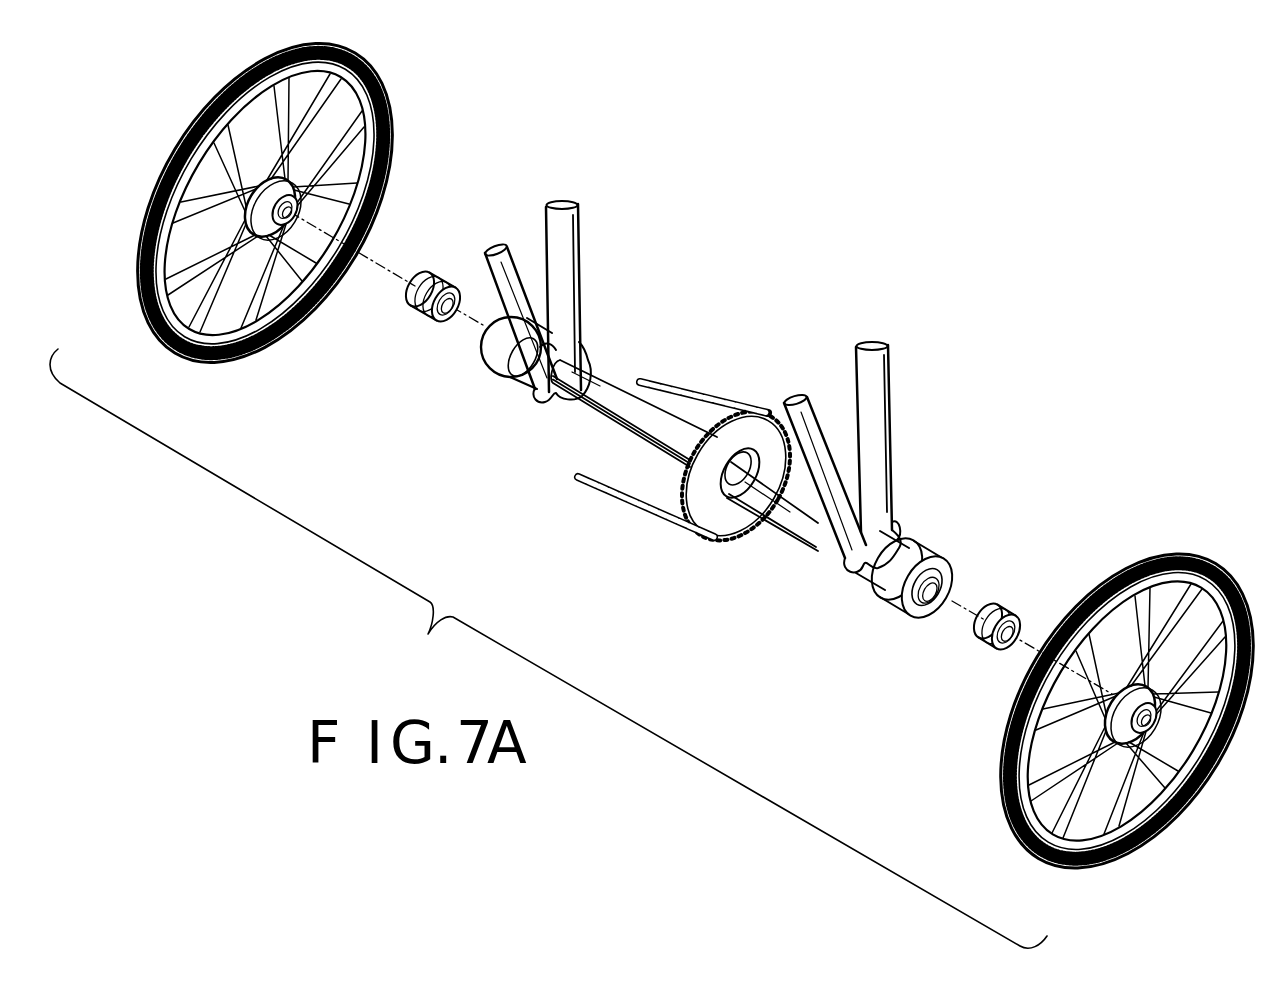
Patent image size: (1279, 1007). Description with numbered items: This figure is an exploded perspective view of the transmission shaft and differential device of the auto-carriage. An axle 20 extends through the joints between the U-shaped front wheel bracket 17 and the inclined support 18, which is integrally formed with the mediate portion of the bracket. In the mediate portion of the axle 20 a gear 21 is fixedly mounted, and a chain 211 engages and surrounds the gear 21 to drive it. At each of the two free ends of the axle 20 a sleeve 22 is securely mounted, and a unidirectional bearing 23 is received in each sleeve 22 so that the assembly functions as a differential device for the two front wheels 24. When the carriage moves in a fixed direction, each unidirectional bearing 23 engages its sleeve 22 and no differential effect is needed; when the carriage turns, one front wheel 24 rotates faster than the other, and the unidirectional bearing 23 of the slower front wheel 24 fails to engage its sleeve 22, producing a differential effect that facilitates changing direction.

The front wheel bracket 17 is at (580, 248).
The inclined support 18 is at (500, 243).
The axle 20 is at (632, 434).
The gear 21 is at (730, 504).
The chain 211 is at (647, 514).
The sleeve 22 is at (496, 375).
The unidirectional bearing 23 is at (418, 322).
The front wheel 24 is at (222, 362).